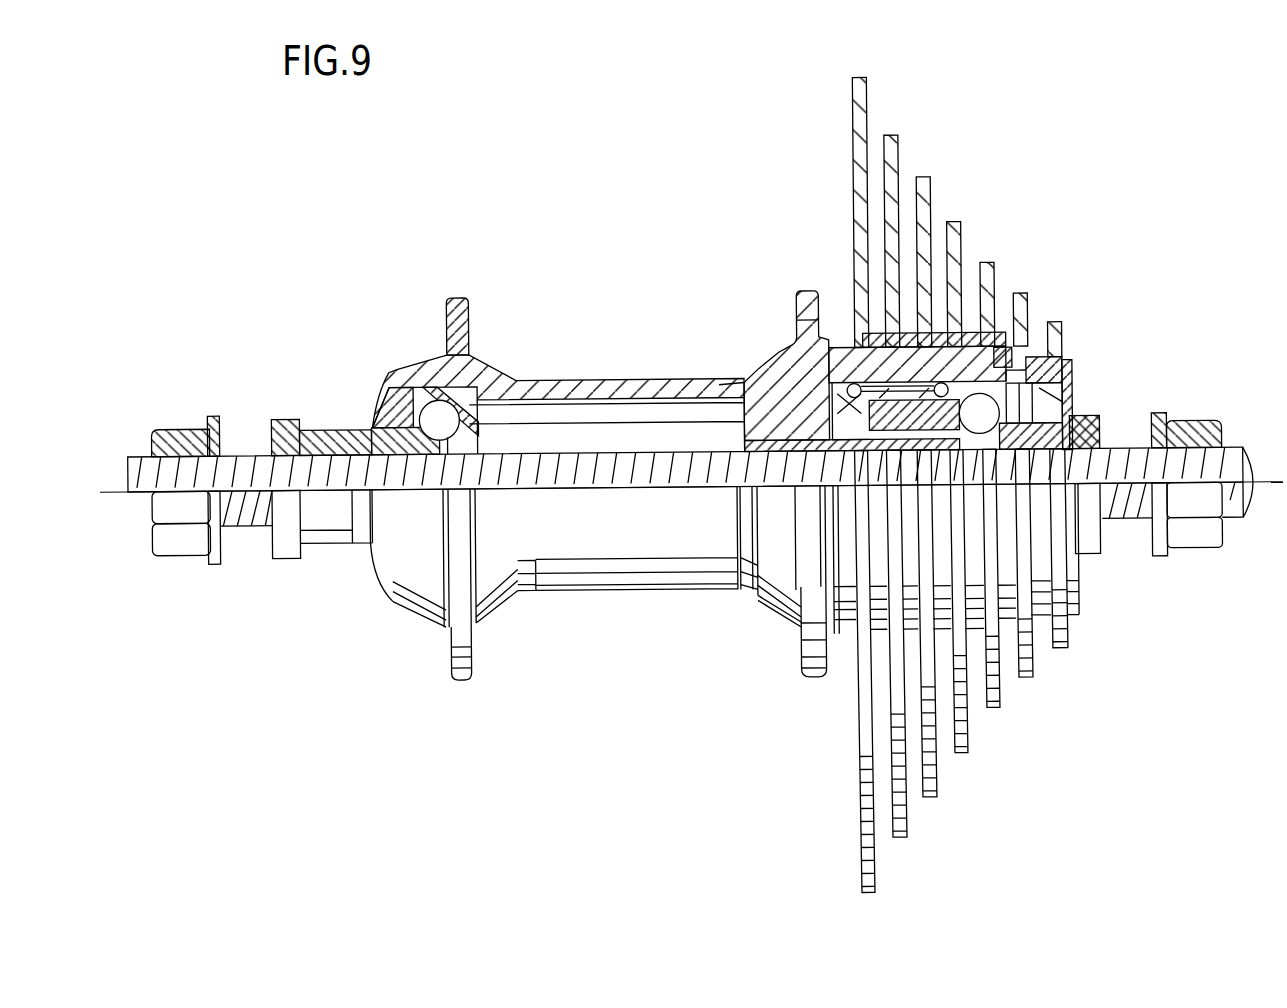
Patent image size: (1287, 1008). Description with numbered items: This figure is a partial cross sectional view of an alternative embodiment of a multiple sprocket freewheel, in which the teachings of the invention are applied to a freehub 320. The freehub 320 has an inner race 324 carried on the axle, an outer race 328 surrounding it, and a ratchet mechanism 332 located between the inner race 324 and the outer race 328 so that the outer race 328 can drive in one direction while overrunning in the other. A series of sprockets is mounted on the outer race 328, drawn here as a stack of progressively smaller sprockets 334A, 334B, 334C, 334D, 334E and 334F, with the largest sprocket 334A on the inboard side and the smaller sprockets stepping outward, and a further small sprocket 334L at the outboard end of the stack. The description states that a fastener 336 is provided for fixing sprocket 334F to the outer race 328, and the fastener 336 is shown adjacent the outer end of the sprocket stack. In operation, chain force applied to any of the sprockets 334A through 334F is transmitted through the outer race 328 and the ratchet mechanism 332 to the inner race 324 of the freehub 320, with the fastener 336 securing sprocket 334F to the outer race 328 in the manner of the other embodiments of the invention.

The freehub 320 is at (546, 308).
The inner race 324 is at (1098, 424).
The outer race 328 is at (845, 373).
The ratchet mechanism 332 is at (835, 443).
The sprocket 334A is at (860, 86).
The sprocket 334B is at (894, 142).
The sprocket 334C is at (926, 184).
The sprocket 334D is at (958, 229).
The sprocket 334E is at (990, 270).
The sprocket 334F is at (1022, 301).
The sprocket 334L is at (1066, 346).
The fastener 336 is at (1027, 358).